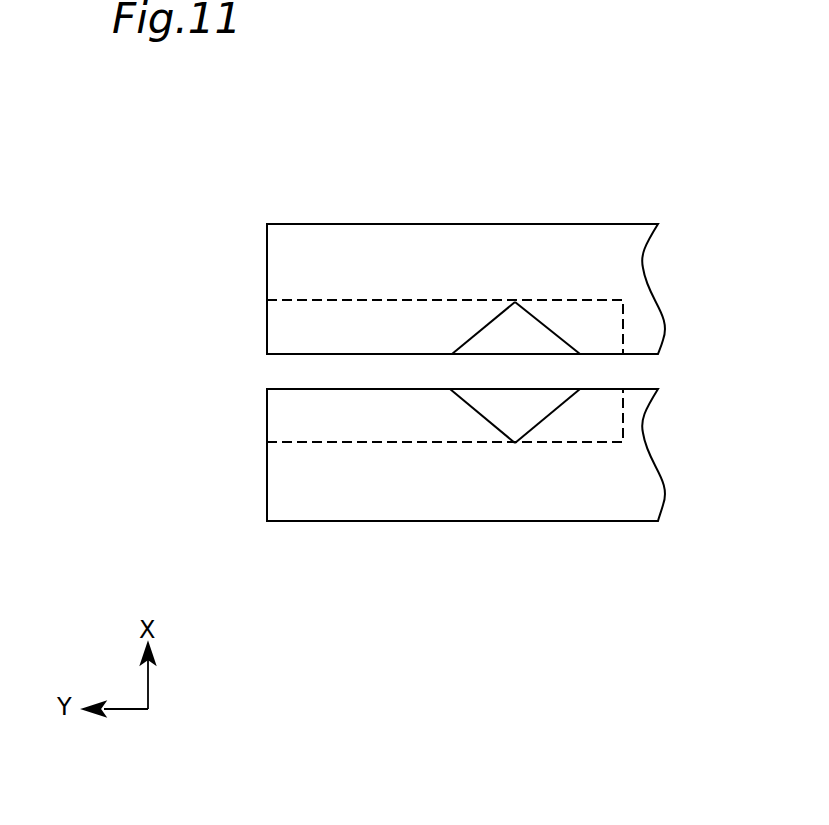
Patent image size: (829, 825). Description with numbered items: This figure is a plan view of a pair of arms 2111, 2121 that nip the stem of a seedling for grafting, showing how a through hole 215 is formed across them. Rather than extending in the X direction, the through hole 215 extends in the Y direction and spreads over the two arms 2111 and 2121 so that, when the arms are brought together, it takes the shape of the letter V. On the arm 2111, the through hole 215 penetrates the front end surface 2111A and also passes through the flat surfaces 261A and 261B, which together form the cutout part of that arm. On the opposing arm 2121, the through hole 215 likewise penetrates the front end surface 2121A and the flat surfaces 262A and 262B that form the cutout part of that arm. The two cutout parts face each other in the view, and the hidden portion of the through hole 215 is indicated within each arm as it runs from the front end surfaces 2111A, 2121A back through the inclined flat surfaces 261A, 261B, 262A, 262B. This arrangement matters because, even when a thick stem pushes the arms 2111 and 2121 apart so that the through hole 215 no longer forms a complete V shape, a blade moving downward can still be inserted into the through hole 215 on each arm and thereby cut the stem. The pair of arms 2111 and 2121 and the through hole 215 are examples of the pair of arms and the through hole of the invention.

The arm 2121 is at (522, 237).
The front end surface 2121A is at (267, 265).
The flat surface 262A is at (479, 333).
The flat surface 262B is at (562, 339).
The arm 2111 is at (522, 508).
The front end surface 2111A is at (267, 478).
The flat surface 261A is at (479, 417).
The flat surface 261B is at (562, 411).
The through hole 215 is at (336, 300).